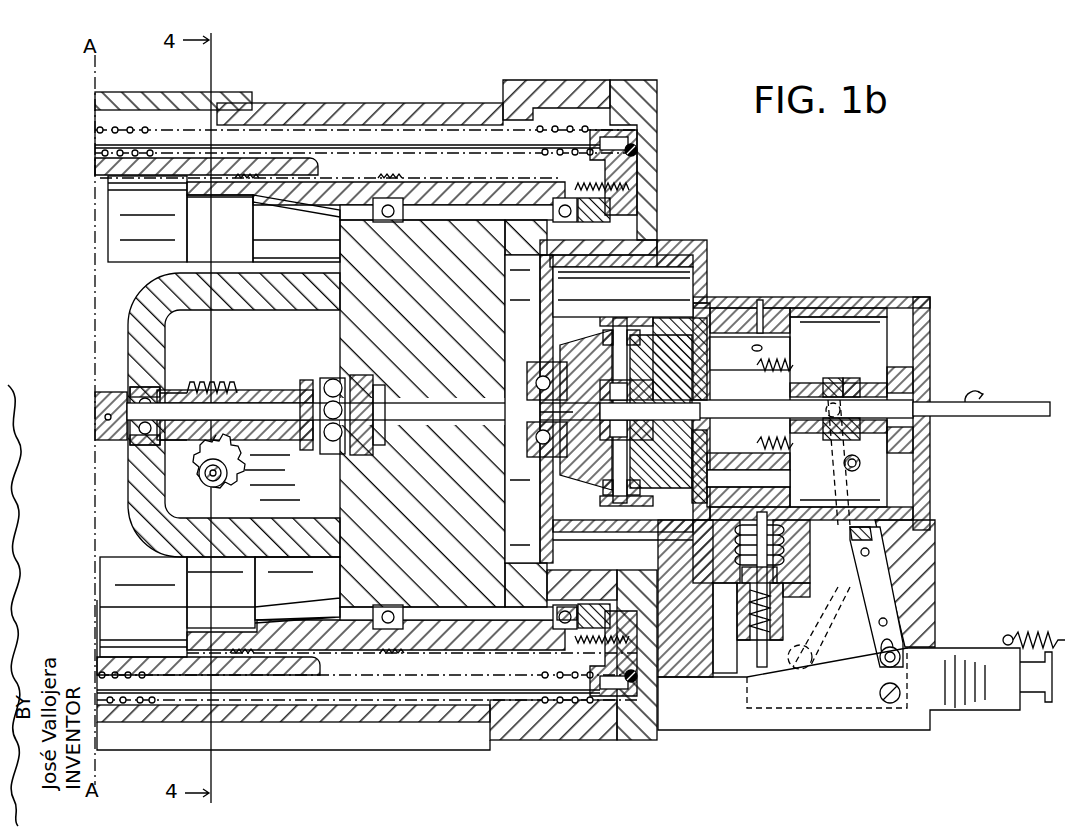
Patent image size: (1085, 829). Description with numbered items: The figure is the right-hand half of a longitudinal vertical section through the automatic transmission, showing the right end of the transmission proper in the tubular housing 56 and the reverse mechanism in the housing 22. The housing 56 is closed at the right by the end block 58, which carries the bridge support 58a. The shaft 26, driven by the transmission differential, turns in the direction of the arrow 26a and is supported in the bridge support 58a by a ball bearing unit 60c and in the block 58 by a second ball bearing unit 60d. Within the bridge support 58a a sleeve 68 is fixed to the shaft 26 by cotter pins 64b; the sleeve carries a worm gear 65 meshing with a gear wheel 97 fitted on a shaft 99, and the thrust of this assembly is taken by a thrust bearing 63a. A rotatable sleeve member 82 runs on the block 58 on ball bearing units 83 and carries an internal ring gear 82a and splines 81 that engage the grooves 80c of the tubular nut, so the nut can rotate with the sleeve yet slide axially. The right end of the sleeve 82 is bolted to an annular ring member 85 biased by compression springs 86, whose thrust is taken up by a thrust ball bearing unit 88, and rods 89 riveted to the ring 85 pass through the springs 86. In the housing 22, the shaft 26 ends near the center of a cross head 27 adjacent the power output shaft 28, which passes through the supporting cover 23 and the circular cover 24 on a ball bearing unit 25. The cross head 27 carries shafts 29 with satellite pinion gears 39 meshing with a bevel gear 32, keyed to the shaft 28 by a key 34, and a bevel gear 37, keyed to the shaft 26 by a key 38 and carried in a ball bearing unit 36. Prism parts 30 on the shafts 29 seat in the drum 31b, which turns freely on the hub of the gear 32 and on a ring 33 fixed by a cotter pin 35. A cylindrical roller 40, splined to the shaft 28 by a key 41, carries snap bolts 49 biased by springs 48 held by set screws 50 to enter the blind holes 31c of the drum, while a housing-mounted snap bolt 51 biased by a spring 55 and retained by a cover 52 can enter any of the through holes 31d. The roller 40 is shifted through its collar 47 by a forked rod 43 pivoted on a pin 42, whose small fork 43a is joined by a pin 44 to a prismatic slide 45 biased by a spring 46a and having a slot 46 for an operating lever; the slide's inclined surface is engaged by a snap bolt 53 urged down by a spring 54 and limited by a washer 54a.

The housing 22 is at (700, 243).
The supporting cover 23 is at (870, 298).
The circular cover 24 is at (928, 355).
The ball bearing unit 25 is at (887, 395).
The shaft 26 is at (262, 410).
The arrow 26a is at (447, 404).
The cross head 27 is at (597, 470).
The power output shaft 28 is at (992, 402).
The shafts 29 is at (603, 350).
The parts 30 is at (617, 323).
The drum 31b is at (718, 320).
The blind holes 31c is at (682, 520).
The radially-extending through holes 31d is at (762, 320).
The bevel gear 32 is at (690, 370).
The ring 33 is at (725, 377).
The key 34 is at (687, 497).
The cotter pin 35 is at (780, 370).
The ball bearing unit 36 is at (540, 377).
The bevel gear 37 is at (543, 383).
The key 38 is at (540, 440).
The satellite pinion gear 39 is at (583, 357).
The cylindrical roller 40 is at (780, 468).
The key 41 is at (797, 433).
The pin 42 is at (856, 463).
The forked rod 43 is at (865, 570).
The small fork 43a is at (882, 641).
The pin 44 is at (880, 658).
The prismatic slide 45 is at (978, 652).
The slot 46 is at (1043, 698).
The spring 46a is at (1008, 636).
The collar 47 is at (847, 433).
The springs 48 is at (800, 377).
The snap bolts 49 is at (687, 333).
The set screws 50 is at (813, 380).
The snap bolt 51 is at (777, 535).
The cover 52 is at (782, 603).
The snap bolt 53 is at (758, 662).
The spring 54 is at (743, 607).
The washer 54a is at (753, 645).
The spring 55 is at (777, 557).
The tubular housing 56 is at (395, 77).
The end block 58 is at (647, 170).
The bridge support 58a is at (157, 285).
The ball bearing unit 60c is at (153, 387).
The ball bearing unit 60d is at (363, 387).
The thrust bearing 63a is at (334, 462).
The cotter pins 64b is at (147, 393).
The worm gear 65 is at (213, 385).
The sleeve 68 is at (288, 390).
The grooves 80c is at (127, 178).
The splines 81 is at (357, 182).
The rotatable sleeve member 82 is at (473, 190).
The internal ring gear 82a is at (347, 213).
The ball bearing units 83 is at (395, 625).
The annular ring member 85 is at (620, 207).
The compression springs 86 is at (127, 127).
The thrust ball bearing unit 88 is at (632, 150).
The rods 89 is at (317, 137).
The gear wheel 97 is at (240, 460).
The shaft 99 is at (200, 492).